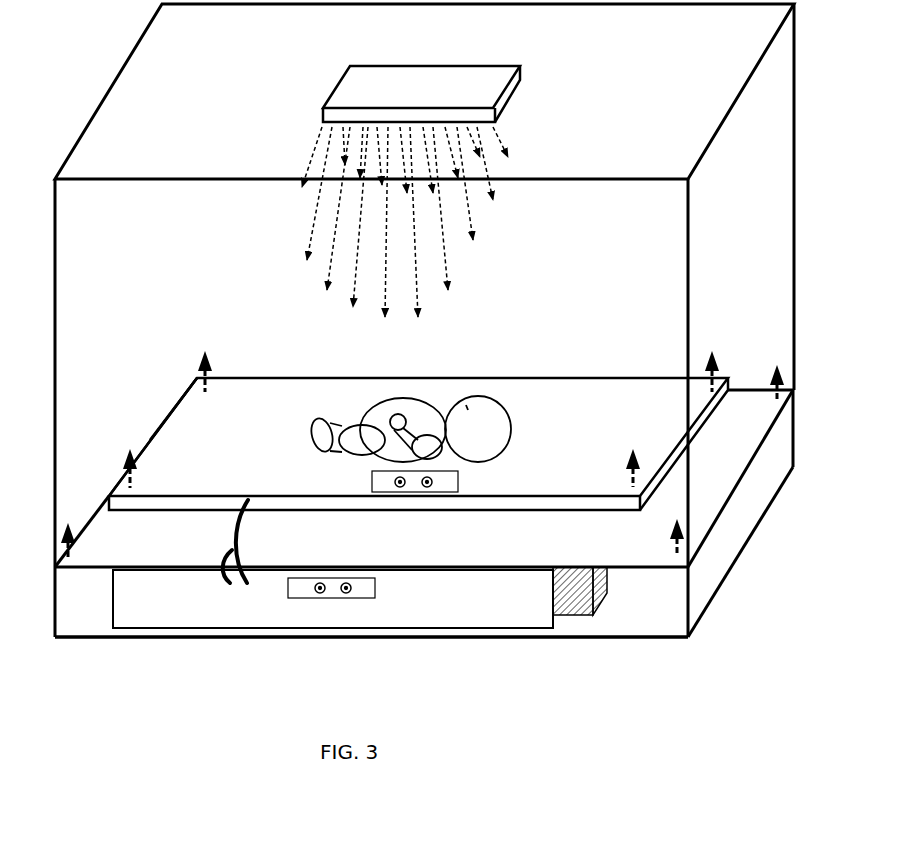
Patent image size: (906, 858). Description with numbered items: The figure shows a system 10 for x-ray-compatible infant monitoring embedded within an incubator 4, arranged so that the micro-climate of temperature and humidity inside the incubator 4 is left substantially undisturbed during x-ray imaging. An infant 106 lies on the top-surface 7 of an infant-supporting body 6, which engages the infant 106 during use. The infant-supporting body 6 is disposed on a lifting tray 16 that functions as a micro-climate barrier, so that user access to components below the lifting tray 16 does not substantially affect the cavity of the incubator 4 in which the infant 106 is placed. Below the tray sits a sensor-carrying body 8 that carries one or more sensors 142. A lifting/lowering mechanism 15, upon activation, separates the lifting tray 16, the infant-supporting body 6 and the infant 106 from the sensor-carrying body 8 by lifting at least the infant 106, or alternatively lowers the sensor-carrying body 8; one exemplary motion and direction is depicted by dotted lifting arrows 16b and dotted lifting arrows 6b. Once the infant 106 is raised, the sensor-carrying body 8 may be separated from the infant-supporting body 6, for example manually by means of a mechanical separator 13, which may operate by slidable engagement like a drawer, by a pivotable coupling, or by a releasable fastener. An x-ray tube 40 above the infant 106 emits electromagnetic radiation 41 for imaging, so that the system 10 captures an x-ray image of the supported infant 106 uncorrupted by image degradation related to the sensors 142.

The incubator 4 is at (67, 202).
The infant-supporting body 6 is at (140, 507).
The dotted lifting arrows 6b is at (203, 380).
The top-surface 7 is at (170, 448).
The sensor-carrying body 8 is at (112, 592).
The system 10 is at (90, 668).
The mechanical separator 13 is at (243, 527).
The lifting/lowering mechanism 15 is at (604, 603).
The lifting tray 16 is at (700, 510).
The dotted lifting arrows 16b is at (72, 538).
The x-ray tube 40 is at (352, 85).
The electromagnetic radiation 41 is at (399, 222).
The infant 106 is at (409, 429).
The sensors 142 is at (458, 484).